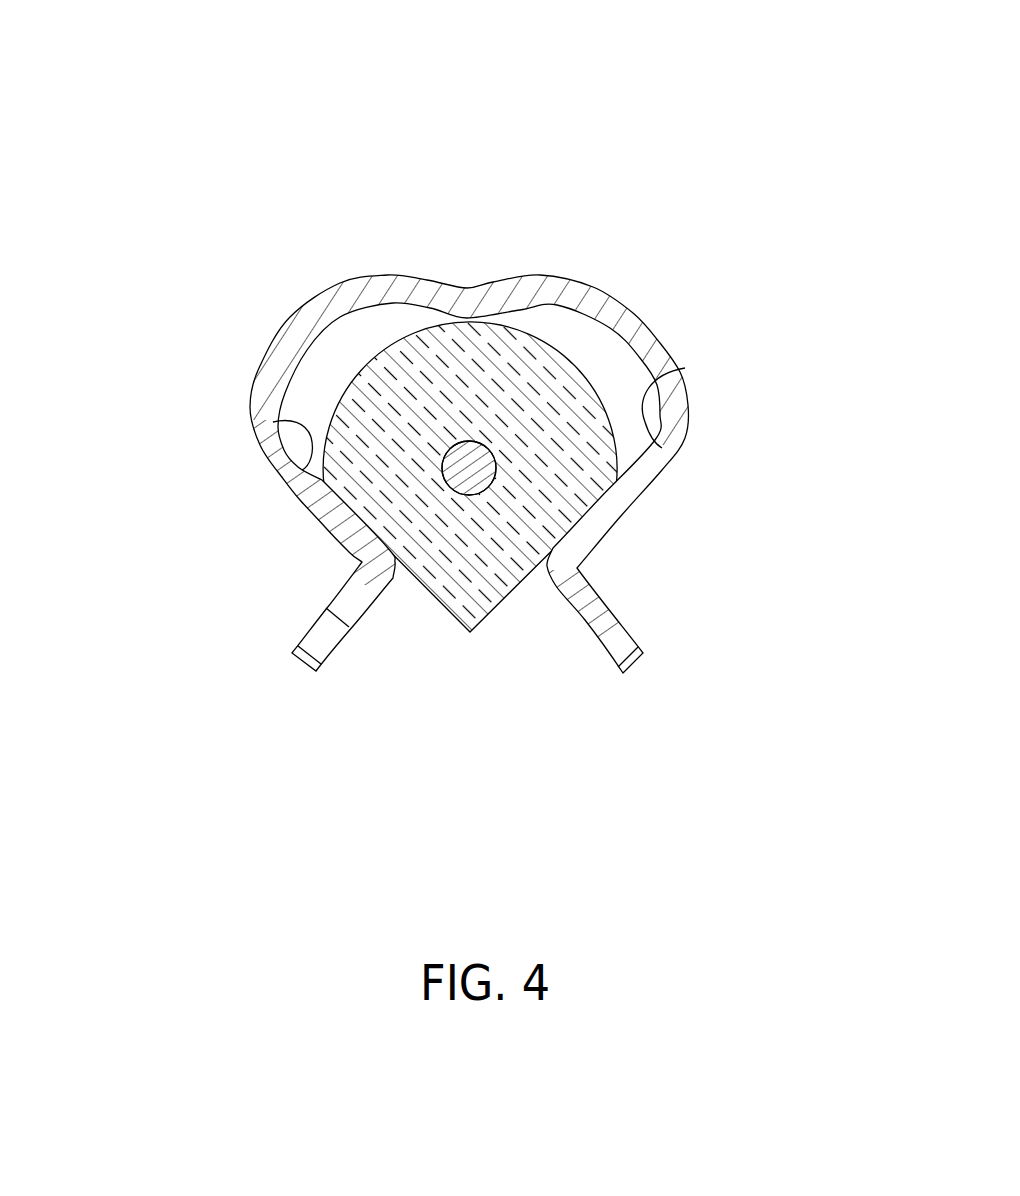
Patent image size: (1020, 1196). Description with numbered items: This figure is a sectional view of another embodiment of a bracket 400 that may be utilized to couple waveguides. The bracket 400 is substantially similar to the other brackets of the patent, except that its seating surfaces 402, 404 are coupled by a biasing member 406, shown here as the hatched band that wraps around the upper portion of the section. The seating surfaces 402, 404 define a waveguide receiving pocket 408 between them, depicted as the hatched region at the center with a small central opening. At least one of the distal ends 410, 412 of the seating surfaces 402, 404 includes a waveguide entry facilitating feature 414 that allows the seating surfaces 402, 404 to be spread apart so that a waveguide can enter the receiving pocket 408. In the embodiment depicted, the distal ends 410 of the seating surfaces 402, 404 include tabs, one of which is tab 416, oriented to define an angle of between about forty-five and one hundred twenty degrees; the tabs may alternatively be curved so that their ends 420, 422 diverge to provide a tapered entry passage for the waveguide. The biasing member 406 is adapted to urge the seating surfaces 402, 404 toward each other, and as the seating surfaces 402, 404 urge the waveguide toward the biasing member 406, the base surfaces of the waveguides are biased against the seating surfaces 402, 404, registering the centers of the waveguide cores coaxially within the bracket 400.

The bracket 400 is at (465, 172).
The seating surface 402 is at (273, 422).
The seating surface 404 is at (685, 368).
The biasing member 406 is at (323, 290).
The waveguide receiving pocket 408 is at (592, 355).
The distal end 410 is at (398, 622).
The distal end 412 is at (540, 622).
The waveguide entry facilitating feature 414 is at (332, 608).
The tab 416 is at (600, 608).
The end 420 is at (303, 673).
The end 422 is at (635, 668).